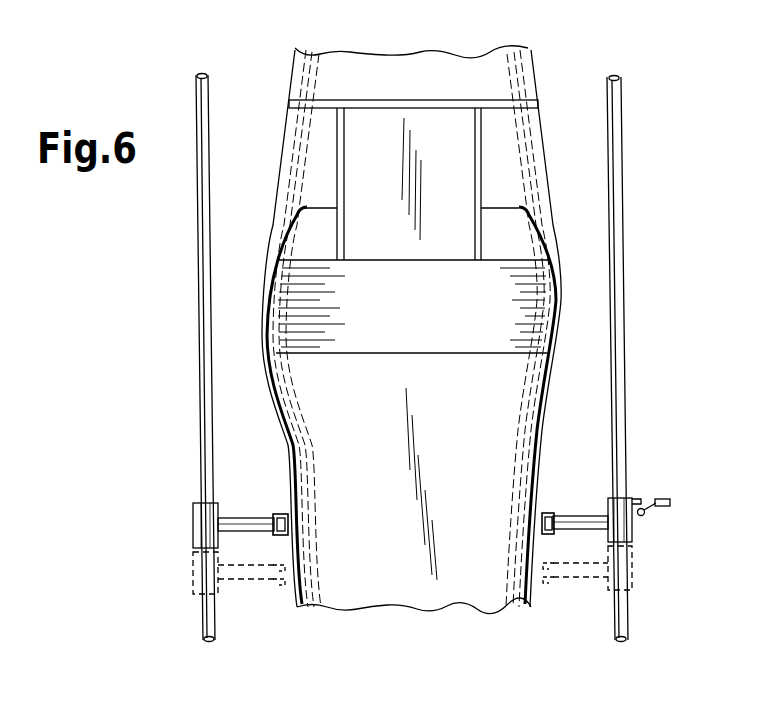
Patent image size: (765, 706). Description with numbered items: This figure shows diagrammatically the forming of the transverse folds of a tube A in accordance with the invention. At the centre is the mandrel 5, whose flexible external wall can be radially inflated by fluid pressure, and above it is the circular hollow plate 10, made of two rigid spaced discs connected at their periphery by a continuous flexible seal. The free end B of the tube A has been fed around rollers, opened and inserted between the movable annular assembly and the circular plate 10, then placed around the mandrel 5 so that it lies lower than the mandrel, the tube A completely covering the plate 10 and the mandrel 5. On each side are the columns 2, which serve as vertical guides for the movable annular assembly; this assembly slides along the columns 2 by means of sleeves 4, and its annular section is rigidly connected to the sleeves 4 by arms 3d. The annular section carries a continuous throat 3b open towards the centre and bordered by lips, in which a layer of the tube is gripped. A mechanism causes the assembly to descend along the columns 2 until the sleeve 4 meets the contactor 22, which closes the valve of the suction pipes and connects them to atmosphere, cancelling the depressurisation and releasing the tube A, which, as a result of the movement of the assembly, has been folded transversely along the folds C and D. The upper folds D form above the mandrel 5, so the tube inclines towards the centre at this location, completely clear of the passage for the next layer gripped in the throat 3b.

The circular hollow plate 10 is at (419, 97).
The columns 2 is at (202, 223).
The mandrel 5 is at (521, 315).
The sleeves 4 is at (194, 520).
The arms 3d is at (242, 520).
The throat 3b is at (279, 515).
The contactor 22 is at (664, 498).
The tube A is at (273, 374).
The free end of the tube B is at (339, 608).
The fold C is at (290, 536).
The upper folds D is at (300, 213).